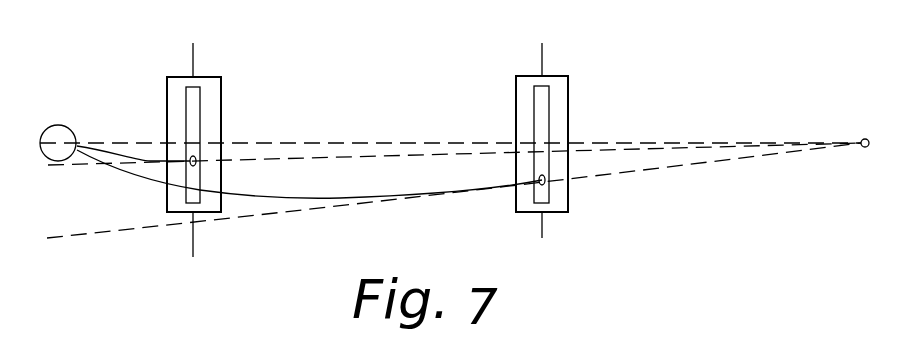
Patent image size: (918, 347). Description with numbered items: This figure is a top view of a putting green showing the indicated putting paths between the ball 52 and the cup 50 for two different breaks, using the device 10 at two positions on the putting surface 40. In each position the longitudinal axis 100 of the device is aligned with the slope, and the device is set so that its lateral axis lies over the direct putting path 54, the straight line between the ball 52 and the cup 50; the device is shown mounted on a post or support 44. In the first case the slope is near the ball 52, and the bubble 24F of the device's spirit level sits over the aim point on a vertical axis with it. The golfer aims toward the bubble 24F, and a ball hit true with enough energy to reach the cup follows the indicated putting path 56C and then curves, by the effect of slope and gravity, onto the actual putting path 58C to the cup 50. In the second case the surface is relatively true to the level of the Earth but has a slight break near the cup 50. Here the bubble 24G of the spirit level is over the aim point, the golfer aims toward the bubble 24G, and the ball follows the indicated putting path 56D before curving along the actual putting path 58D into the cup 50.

The sensor unit 10 is at (167, 92).
The bubble 24F is at (545, 184).
The bubble 24G is at (196, 165).
The playing field 40 is at (456, 235).
The support post 44 is at (191, 55).
The cup 50 is at (60, 127).
The ball 52 is at (868, 139).
The direct putting path 54 is at (280, 141).
The indicated putting path 56C is at (252, 216).
The indicated putting path 56D is at (357, 158).
The actual putting path 58C is at (134, 179).
The actual putting path 58D is at (111, 152).
The longitudinal axis 100 is at (190, 242).